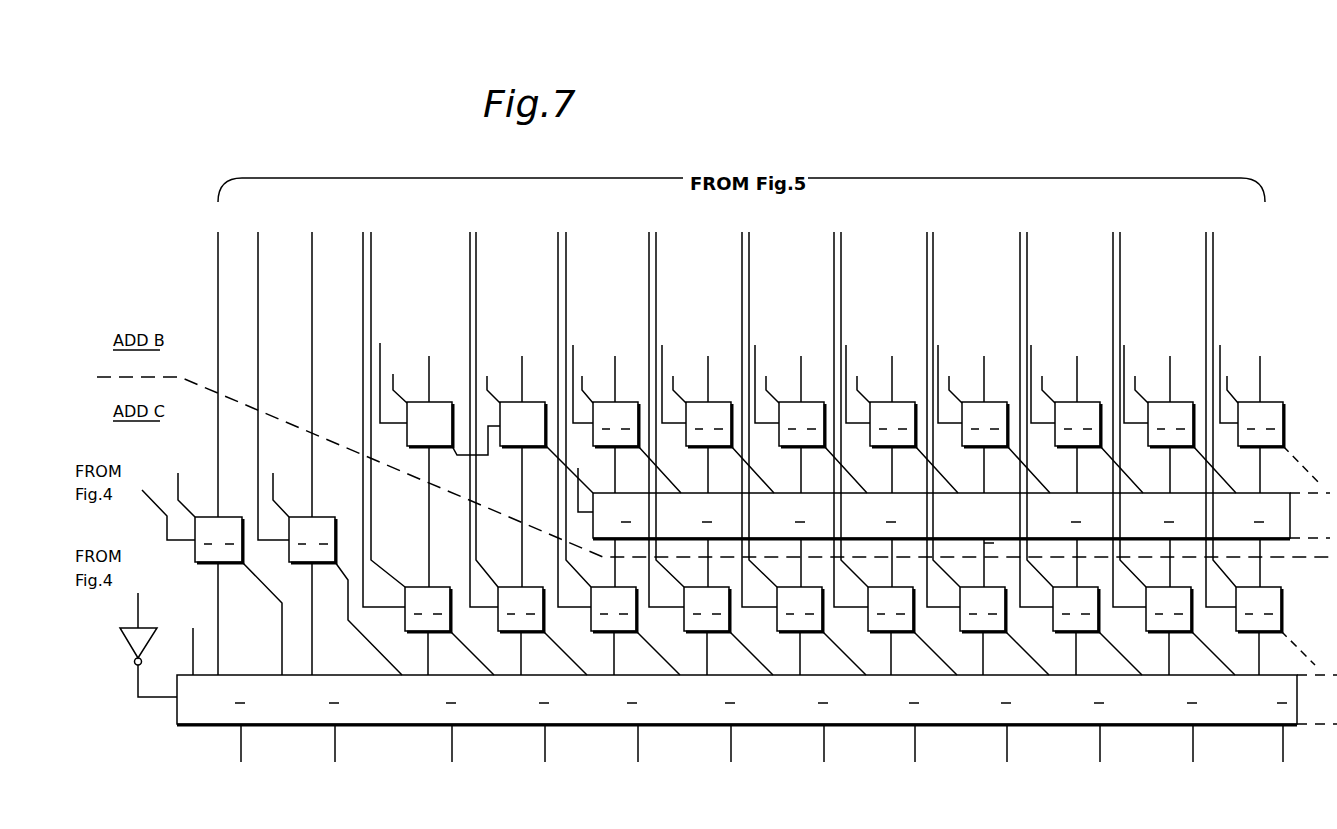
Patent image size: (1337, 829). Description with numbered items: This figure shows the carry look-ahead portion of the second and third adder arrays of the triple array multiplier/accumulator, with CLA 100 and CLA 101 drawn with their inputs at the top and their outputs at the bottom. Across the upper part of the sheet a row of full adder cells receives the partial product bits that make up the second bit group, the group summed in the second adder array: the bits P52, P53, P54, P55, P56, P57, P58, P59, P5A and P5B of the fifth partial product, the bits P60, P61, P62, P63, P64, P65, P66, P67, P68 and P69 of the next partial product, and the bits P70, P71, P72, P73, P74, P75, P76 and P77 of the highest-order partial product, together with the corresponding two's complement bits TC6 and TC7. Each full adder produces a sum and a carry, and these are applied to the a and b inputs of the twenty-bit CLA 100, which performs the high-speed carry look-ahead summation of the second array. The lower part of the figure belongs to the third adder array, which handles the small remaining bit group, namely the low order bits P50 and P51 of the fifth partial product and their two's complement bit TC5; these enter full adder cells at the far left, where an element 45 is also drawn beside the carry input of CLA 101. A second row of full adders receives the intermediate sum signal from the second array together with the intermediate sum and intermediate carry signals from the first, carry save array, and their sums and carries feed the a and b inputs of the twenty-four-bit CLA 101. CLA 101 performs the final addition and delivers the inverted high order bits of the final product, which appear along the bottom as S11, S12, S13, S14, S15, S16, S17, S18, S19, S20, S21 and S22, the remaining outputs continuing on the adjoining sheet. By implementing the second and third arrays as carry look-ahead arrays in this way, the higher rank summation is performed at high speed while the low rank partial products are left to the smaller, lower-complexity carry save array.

The inverter 45 is at (136, 645).
The carry look-ahead adder 100 is at (1006, 529).
The carry look-ahead adder 101 is at (707, 712).
The two's complement bit TC5 is at (208, 599).
The two's complement bit TC6 is at (390, 373).
The two's complement bit TC7 is at (591, 480).
The partial product bit P50 is at (212, 453).
The partial product bit P51 is at (330, 453).
The partial product bit P52 is at (431, 513).
The partial product bit P53 is at (531, 513).
The partial product bit P54 is at (619, 513).
The partial product bit P55 is at (711, 513).
The partial product bit P56 is at (804, 513).
The partial product bit P57 is at (896, 513).
The partial product bit P58 is at (988, 513).
The partial product bit P59 is at (1081, 513).
The partial product bit P5A is at (1174, 513).
The partial product bit P5B is at (1263, 513).
The partial product bit P60 is at (399, 378).
The partial product bit P61 is at (492, 379).
The partial product bit P62 is at (591, 379).
The partial product bit P63 is at (683, 379).
The partial product bit P64 is at (776, 379).
The partial product bit P65 is at (867, 379).
The partial product bit P66 is at (959, 379).
The partial product bit P67 is at (1052, 379).
The partial product bit P68 is at (1145, 379).
The partial product bit P69 is at (1235, 379).
The partial product bit P70 is at (583, 374).
The partial product bit P71 is at (672, 374).
The partial product bit P72 is at (765, 374).
The partial product bit P73 is at (856, 374).
The partial product bit P74 is at (948, 374).
The partial product bit P75 is at (1041, 374).
The partial product bit P76 is at (1134, 374).
The partial product bit P77 is at (1224, 374).
The inverted product bit S11 is at (253, 769).
The inverted product bit S12 is at (347, 769).
The inverted product bit S13 is at (452, 747).
The inverted product bit S14 is at (545, 747).
The inverted product bit S15 is at (638, 747).
The inverted product bit S16 is at (731, 747).
The inverted product bit S17 is at (824, 747).
The inverted product bit S18 is at (915, 747).
The inverted product bit S19 is at (1007, 747).
The inverted product bit S20 is at (1100, 747).
The inverted product bit S21 is at (1193, 747).
The inverted product bit S22 is at (1283, 747).